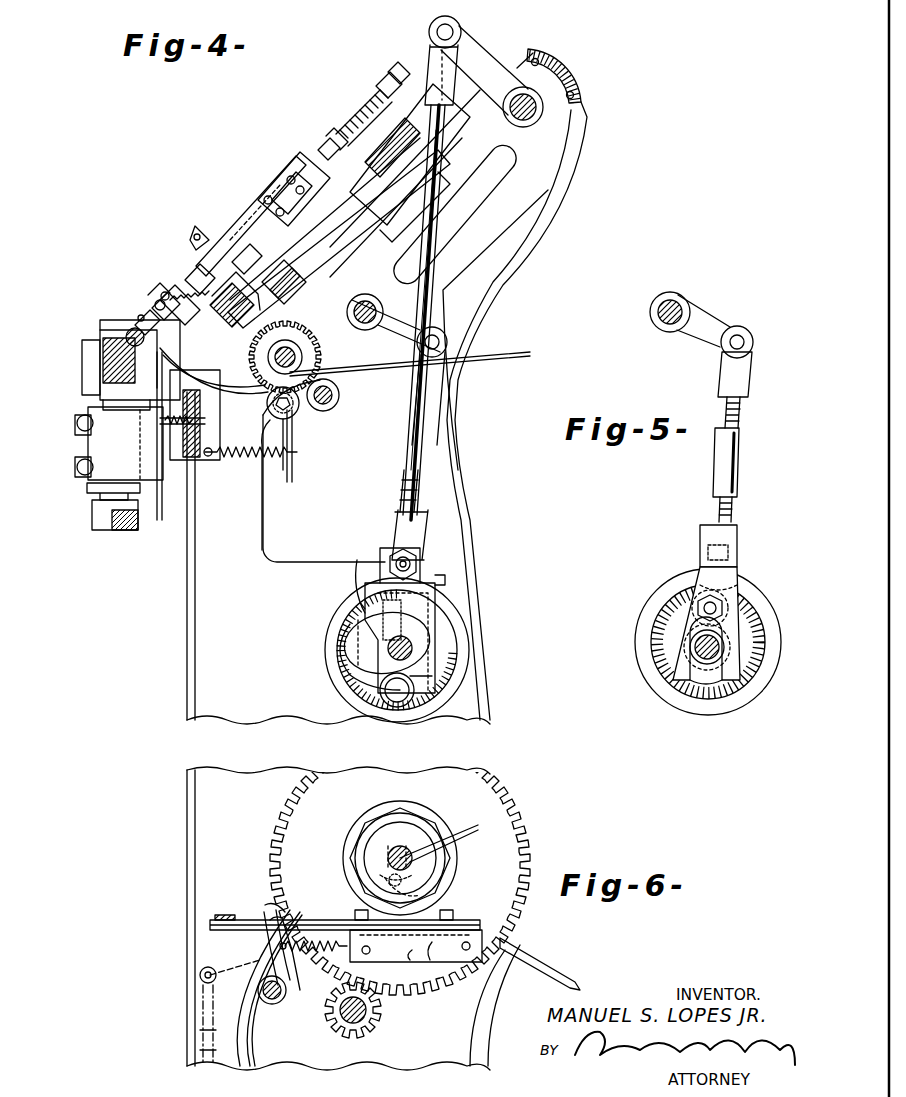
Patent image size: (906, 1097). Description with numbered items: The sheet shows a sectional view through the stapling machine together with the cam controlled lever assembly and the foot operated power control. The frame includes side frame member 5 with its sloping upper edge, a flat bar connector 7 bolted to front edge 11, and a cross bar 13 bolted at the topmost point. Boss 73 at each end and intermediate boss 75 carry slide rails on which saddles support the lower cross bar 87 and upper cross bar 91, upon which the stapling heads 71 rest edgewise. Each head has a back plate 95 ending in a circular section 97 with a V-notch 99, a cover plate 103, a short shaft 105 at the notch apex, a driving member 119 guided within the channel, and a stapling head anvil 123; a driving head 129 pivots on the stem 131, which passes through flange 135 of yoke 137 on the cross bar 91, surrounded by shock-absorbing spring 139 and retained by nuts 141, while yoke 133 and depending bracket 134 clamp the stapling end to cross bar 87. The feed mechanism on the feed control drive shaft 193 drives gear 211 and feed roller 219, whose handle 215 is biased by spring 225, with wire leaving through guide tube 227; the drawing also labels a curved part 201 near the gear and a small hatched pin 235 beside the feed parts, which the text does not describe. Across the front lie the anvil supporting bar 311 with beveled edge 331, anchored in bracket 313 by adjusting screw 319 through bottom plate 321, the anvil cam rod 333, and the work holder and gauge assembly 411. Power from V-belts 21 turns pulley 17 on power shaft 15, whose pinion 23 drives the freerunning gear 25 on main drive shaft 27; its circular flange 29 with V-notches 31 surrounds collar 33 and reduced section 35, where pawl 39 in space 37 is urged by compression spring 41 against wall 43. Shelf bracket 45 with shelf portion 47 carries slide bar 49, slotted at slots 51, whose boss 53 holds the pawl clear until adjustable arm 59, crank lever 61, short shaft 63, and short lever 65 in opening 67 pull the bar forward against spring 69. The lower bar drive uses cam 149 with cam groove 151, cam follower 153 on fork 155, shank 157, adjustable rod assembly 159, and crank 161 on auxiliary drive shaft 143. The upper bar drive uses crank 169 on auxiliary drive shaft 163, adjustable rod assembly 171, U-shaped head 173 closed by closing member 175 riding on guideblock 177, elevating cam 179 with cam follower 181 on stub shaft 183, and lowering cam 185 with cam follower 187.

In FIG. 4, the side frame member 5 is at (229, 591).
In FIG. 6, the side frame member 5 is at (226, 807).
In FIG. 4, the flat bar connector 7 is at (204, 438).
In FIG. 4, the front edge 11 is at (186, 607).
In FIG. 4, the cross bar 13 is at (565, 68).
In FIG. 6, the power shaft 15 is at (348, 1018).
In FIG. 6, the pulley 17 is at (472, 1005).
In FIG. 6, the V-belts 21 is at (540, 965).
In FIG. 6, the pinion 23 is at (360, 1030).
In FIG. 6, the freerunning gear 25 is at (520, 812).
In FIG. 4, the main drive shaft 27 is at (413, 647).
In FIG. 5, the main drive shaft 27 is at (706, 662).
In FIG. 6, the main drive shaft 27 is at (408, 856).
In FIG. 6, the circular flange 29 is at (378, 812).
In FIG. 6, the V-notches 31 is at (365, 822).
In FIG. 6, the collar 33 is at (366, 846).
In FIG. 6, the reduced section 35 is at (363, 855).
In FIG. 6, the space 37 is at (376, 880).
In FIG. 6, the pawl 39 is at (386, 900).
In FIG. 6, the compression spring 41 is at (390, 852).
In FIG. 6, the wall 43 is at (430, 860).
In FIG. 6, the shelf bracket 45 is at (412, 960).
In FIG. 6, the shelf portion 47 is at (439, 963).
In FIG. 6, the slide bar 49 is at (326, 923).
In FIG. 6, the slots 51 is at (416, 946).
In FIG. 6, the boss 53 is at (412, 914).
In FIG. 6, the adjustable arm 59 is at (205, 1050).
In FIG. 6, the crank lever 61 is at (222, 968).
In FIG. 6, the short shaft 63 is at (274, 1002).
In FIG. 6, the short lever 65 is at (276, 950).
In FIG. 6, the opening 67 is at (280, 920).
In FIG. 6, the spring 69 is at (325, 955).
In FIG. 4, the stapling heads 71 is at (190, 238).
In FIG. 4, the boss 73 is at (485, 112).
In FIG. 4, the intermediate boss 75 is at (315, 270).
In FIG. 4, the cross bar 87 is at (228, 305).
In FIG. 4, the cross bar 91 is at (349, 166).
In FIG. 4, the back plate 95 is at (172, 255).
In FIG. 4, the circular section 97 is at (155, 300).
In FIG. 4, the V-notch 99 is at (140, 314).
In FIG. 4, the cover plate 103 is at (212, 240).
In FIG. 4, the short shaft 105 is at (180, 285).
In FIG. 4, the driving member 119 is at (232, 220).
In FIG. 4, the stapling head anvil 123 is at (152, 290).
In FIG. 4, the driving head 129 is at (270, 180).
In FIG. 4, the stapling head supporting stem 131 is at (320, 140).
In FIG. 4, the yoke 133 is at (248, 266).
In FIG. 4, the depending bracket 134 is at (292, 312).
In FIG. 4, the flange 135 is at (378, 80).
In FIG. 4, the yoke 137 is at (420, 106).
In FIG. 4, the shock-absorbing spring 139 is at (348, 112).
In FIG. 4, the nuts 141 is at (385, 66).
In FIG. 4, the auxiliary drive shaft 143 is at (362, 300).
In FIG. 5, the auxiliary drive shaft 143 is at (650, 311).
In FIG. 4, the cam 149 is at (336, 625).
In FIG. 5, the cam 149 is at (640, 615).
In FIG. 4, the cam groove 151 is at (462, 637).
In FIG. 5, the cam groove 151 is at (652, 654).
In FIG. 5, the cam follower 153 is at (690, 597).
In FIG. 5, the fork 155 is at (737, 677).
In FIG. 5, the shank 157 is at (727, 570).
In FIG. 4, the adjustable rod assembly 159 is at (436, 480).
In FIG. 5, the adjustable rod assembly 159 is at (737, 463).
In FIG. 4, the crank 161 is at (390, 342).
In FIG. 5, the crank 161 is at (708, 323).
In FIG. 4, the auxiliary drive shaft 163 is at (518, 122).
In FIG. 4, the crank 169 is at (462, 44).
In FIG. 4, the adjustable rod assembly 171 is at (406, 420).
In FIG. 4, the U-shaped head 173 is at (370, 604).
In FIG. 4, the closing member 175 is at (452, 603).
In FIG. 4, the guideblock 177 is at (403, 618).
In FIG. 4, the cam 179 is at (428, 680).
In FIG. 4, the cam follower 181 is at (380, 560).
In FIG. 4, the stub shaft 183 is at (414, 558).
In FIG. 4, the cam 185 is at (348, 645).
In FIG. 4, the cam follower 187 is at (380, 690).
In FIG. 4, the feed control drive shaft 193 is at (326, 370).
In FIG. 4, the sector 201 is at (268, 364).
In FIG. 4, the gear 211 is at (318, 348).
In FIG. 4, the handle 215 is at (293, 467).
In FIG. 4, the feed roller 219 is at (288, 432).
In FIG. 4, the spring 225 is at (236, 456).
In FIG. 4, the guide tube 227 is at (240, 384).
In FIG. 4, the pin 235 is at (326, 410).
In FIG. 4, the anvil supporting bar 311 is at (110, 366).
In FIG. 4, the bracket 313 is at (100, 448).
In FIG. 4, the vertical adjusting screw 319 is at (100, 508).
In FIG. 4, the bottom plate 321 is at (94, 488).
In FIG. 4, the beveled edge 331 is at (100, 340).
In FIG. 4, the anvil cam rod 333 is at (126, 336).
In FIG. 4, the work holder and gauge assembly 411 is at (159, 512).